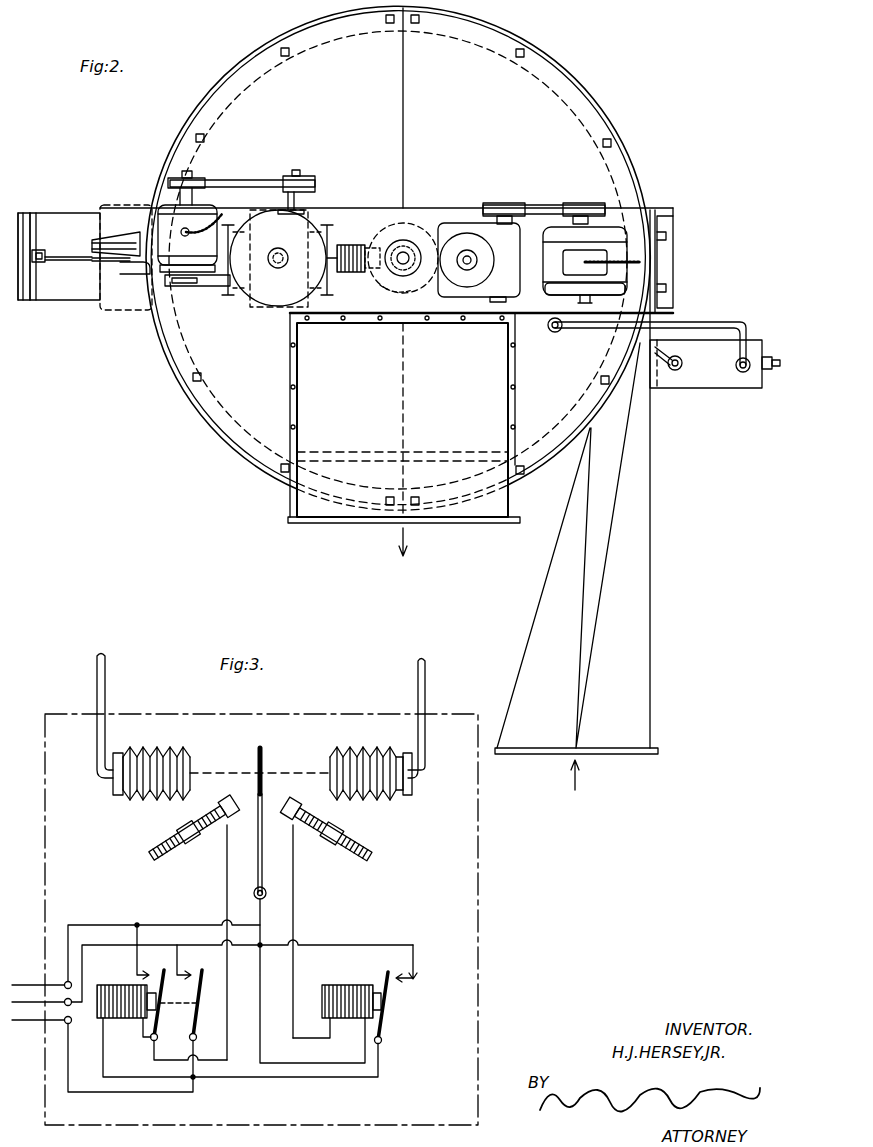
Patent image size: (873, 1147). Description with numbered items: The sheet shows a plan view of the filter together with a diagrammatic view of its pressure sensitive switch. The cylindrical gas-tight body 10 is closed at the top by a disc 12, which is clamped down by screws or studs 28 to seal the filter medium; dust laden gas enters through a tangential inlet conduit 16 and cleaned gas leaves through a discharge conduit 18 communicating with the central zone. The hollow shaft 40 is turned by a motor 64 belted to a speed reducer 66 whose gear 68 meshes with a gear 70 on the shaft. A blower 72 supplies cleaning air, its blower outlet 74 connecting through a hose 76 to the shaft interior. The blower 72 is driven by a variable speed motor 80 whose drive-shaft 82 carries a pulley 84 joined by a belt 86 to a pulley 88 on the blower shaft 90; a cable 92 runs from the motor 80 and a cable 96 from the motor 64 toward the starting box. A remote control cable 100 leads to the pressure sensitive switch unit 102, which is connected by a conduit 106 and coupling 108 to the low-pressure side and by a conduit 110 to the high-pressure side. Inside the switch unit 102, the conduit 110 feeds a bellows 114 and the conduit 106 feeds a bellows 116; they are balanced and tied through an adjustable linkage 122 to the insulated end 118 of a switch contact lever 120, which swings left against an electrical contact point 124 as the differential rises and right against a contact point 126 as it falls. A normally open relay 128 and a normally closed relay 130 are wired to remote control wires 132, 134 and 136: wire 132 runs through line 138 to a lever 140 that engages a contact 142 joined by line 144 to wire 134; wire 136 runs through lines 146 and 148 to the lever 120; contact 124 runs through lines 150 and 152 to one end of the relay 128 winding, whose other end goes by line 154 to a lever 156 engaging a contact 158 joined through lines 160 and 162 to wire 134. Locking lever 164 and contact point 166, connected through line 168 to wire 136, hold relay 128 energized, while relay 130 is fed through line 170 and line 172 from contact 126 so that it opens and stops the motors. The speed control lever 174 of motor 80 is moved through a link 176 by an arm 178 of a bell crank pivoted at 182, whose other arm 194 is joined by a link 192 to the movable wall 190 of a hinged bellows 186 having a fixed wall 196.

In FIG. 2, the filter body 10 is at (636, 166).
In FIG. 2, the disc 12 is at (574, 104).
In FIG. 2, the inlet conduit 16 is at (641, 592).
In FIG. 2, the discharge conduit 18 is at (296, 500).
In FIG. 2, the screws or studs 28 is at (526, 54).
In FIG. 2, the hollow shaft 40 is at (410, 276).
In FIG. 2, the motor 64 is at (560, 285).
In FIG. 2, the speed reducer 66 is at (514, 242).
In FIG. 2, the gear 68 is at (484, 240).
In FIG. 2, the gear 70 is at (412, 236).
In FIG. 2, the blower 72 is at (329, 243).
In FIG. 2, the blower outlet 74 is at (348, 273).
In FIG. 2, the hose 76 is at (376, 272).
In FIG. 2, the variable speed motor 80 is at (168, 218).
In FIG. 2, the drive-shaft 82 is at (192, 176).
In FIG. 2, the pulley 84 is at (178, 182).
In FIG. 2, the belt 86 is at (240, 180).
In FIG. 2, the pulley 88 is at (312, 178).
In FIG. 2, the shaft 90 is at (297, 170).
In FIG. 2, the cable 92 is at (222, 216).
In FIG. 2, the cable 96 is at (642, 262).
In FIG. 2, the cable 100 is at (778, 370).
In FIG. 2, the pressure sensitive switch unit 102 is at (716, 388).
In FIG. 3, the pressure sensitive switch unit 102 is at (482, 917).
In FIG. 2, the conduit 106 is at (718, 322).
In FIG. 3, the conduit 106 is at (97, 696).
In FIG. 2, the coupling 108 is at (556, 333).
In FIG. 2, the conduit 110 is at (670, 354).
In FIG. 3, the conduit 110 is at (426, 676).
In FIG. 3, the bellows 114 is at (362, 762).
In FIG. 3, the bellows 116 is at (157, 755).
In FIG. 3, the insulated end 118 is at (263, 754).
In FIG. 3, the switch contact lever 120 is at (263, 816).
In FIG. 3, the linkage 122 is at (215, 771).
In FIG. 3, the electrical contact point 124 is at (218, 832).
In FIG. 3, the contact point 126 is at (296, 836).
In FIG. 3, the relay 128 is at (121, 986).
In FIG. 3, the relay 130 is at (346, 986).
In FIG. 3, the wire 132 is at (27, 1022).
In FIG. 3, the wire 134 is at (30, 1001).
In FIG. 3, the wire 136 is at (19, 984).
In FIG. 3, the line 138 is at (116, 1093).
In FIG. 3, the lever 140 is at (200, 1010).
In FIG. 3, the contact 142 is at (192, 974).
In FIG. 3, the line 144 is at (118, 945).
In FIG. 3, the line 146 is at (77, 923).
In FIG. 3, the line 148 is at (177, 925).
In FIG. 3, the line 150 is at (226, 898).
In FIG. 3, the line 152 is at (143, 1030).
In FIG. 3, the line 154 is at (250, 1079).
In FIG. 3, the lever 156 is at (385, 1018).
In FIG. 3, the contact 158 is at (398, 980).
In FIG. 3, the line 160 is at (384, 945).
In FIG. 3, the line 162 is at (244, 950).
In FIG. 3, the lever 164 is at (161, 1006).
In FIG. 3, the contact point 166 is at (149, 974).
In FIG. 3, the line 168 is at (139, 935).
In FIG. 3, the line 170 is at (262, 1042).
In FIG. 3, the line 172 is at (298, 910).
In FIG. 2, the speed control lever 174 is at (208, 281).
In FIG. 2, the link 176 is at (149, 278).
In FIG. 2, the arm 178 is at (118, 263).
In FIG. 2, the pivot 182 is at (98, 240).
In FIG. 2, the bellows 186 is at (30, 300).
In FIG. 2, the movable wall 190 is at (54, 213).
In FIG. 2, the link 192 is at (42, 254).
In FIG. 2, the arm 194 is at (62, 262).
In FIG. 2, the wall 196 is at (18, 300).